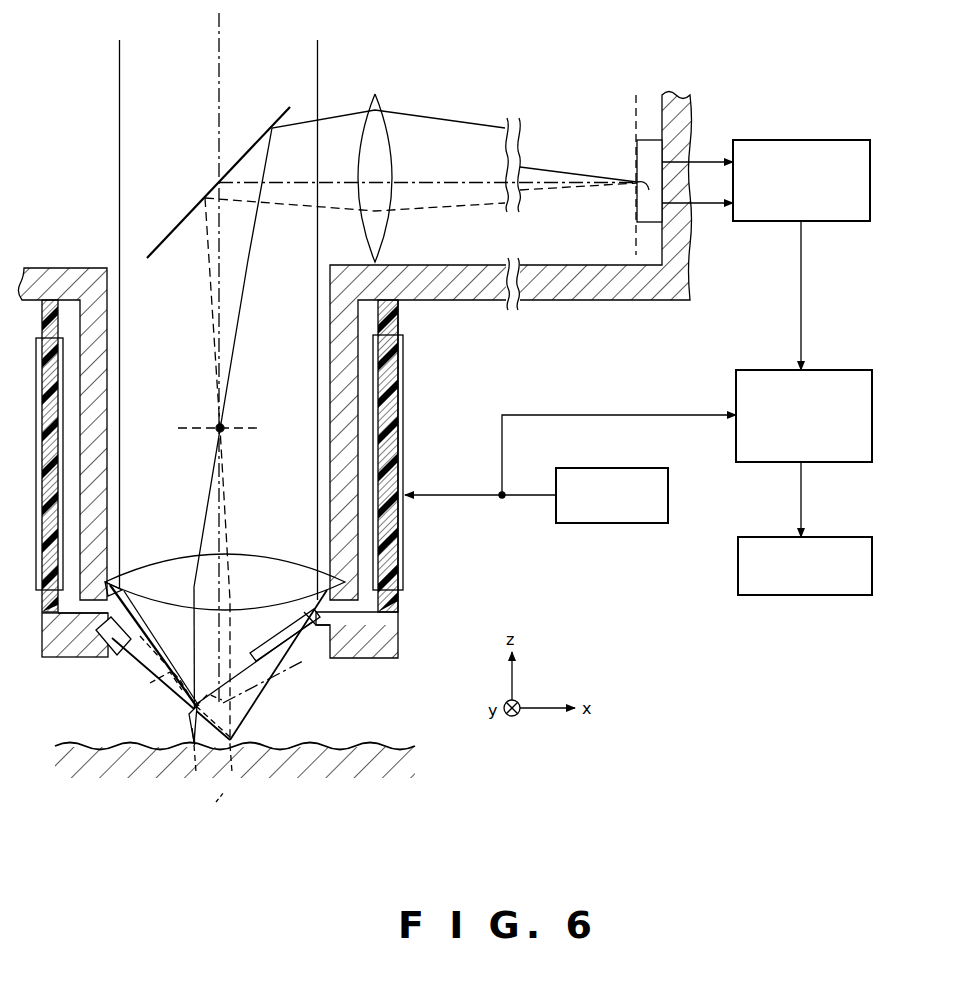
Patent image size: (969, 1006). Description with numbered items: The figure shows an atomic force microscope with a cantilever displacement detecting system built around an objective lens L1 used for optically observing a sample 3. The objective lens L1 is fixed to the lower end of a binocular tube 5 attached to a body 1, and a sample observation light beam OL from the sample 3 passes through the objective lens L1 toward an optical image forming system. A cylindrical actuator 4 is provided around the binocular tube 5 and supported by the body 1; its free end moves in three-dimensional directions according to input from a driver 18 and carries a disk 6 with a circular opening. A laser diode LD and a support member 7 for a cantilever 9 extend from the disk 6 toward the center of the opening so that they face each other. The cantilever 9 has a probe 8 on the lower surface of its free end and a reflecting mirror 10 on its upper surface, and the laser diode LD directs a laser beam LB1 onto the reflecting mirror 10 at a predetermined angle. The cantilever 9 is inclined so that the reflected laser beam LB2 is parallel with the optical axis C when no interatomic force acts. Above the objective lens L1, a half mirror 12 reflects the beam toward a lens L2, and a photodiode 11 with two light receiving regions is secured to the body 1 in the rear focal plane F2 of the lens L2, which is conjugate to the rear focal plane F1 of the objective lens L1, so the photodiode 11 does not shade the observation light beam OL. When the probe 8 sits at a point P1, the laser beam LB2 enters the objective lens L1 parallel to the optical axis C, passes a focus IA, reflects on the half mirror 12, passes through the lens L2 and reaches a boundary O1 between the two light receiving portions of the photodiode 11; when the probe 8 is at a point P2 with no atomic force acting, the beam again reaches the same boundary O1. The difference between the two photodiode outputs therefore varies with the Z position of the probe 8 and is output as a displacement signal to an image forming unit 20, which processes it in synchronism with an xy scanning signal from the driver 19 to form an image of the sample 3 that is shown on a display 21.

The body 1 is at (554, 302).
The sample 3 is at (300, 782).
The cylindrical actuator 4 is at (412, 418).
The binocular tube 5 is at (100, 467).
The disk 6 is at (394, 650).
The support member 7 is at (313, 634).
The probe 8 is at (192, 738).
The cantilever 9 is at (253, 667).
The reflecting mirror 10 is at (196, 701).
The photodiode 11 is at (630, 142).
The half mirror 12 is at (276, 104).
The driver 18 is at (645, 522).
The driver 19 is at (848, 146).
The image forming unit 20 is at (841, 376).
The display 21 is at (850, 600).
The sample observation light beam OL is at (178, 62).
The optical axis C is at (214, 118).
The objective lens L1 is at (268, 562).
The lens L2 is at (390, 152).
The laser diode LD is at (84, 657).
The laser beam LB1 is at (148, 675).
The laser beam LB2 is at (200, 532).
The rear focal plane F1 is at (233, 430).
The rear focal plane F2 is at (631, 165).
The focus IA is at (224, 422).
The boundary O1 is at (640, 192).
The point P1 is at (188, 774).
The point P2 is at (230, 774).